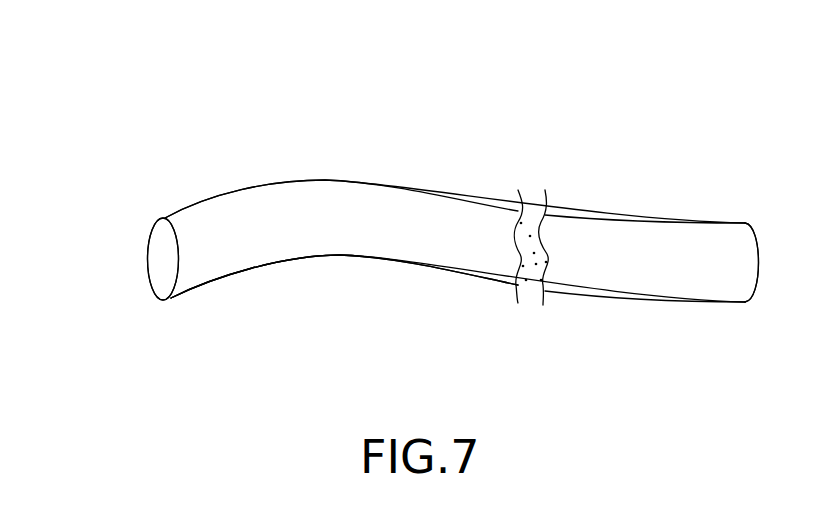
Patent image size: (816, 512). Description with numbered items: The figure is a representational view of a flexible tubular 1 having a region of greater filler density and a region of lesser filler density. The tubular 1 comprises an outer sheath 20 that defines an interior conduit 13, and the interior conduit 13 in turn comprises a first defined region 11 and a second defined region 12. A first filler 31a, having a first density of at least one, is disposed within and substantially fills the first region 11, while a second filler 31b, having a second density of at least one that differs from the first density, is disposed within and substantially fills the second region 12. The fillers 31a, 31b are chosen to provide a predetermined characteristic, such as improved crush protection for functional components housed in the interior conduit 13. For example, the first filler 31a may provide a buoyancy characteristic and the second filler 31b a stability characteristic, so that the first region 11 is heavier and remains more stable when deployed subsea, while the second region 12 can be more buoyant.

The tubular 1 is at (122, 102).
The first defined region 11 is at (263, 230).
The second defined region 12 is at (622, 255).
The interior conduit 13 is at (155, 257).
The outer sheath 20 is at (408, 248).
The first filler 31a is at (167, 235).
The second filler 31b is at (525, 217).